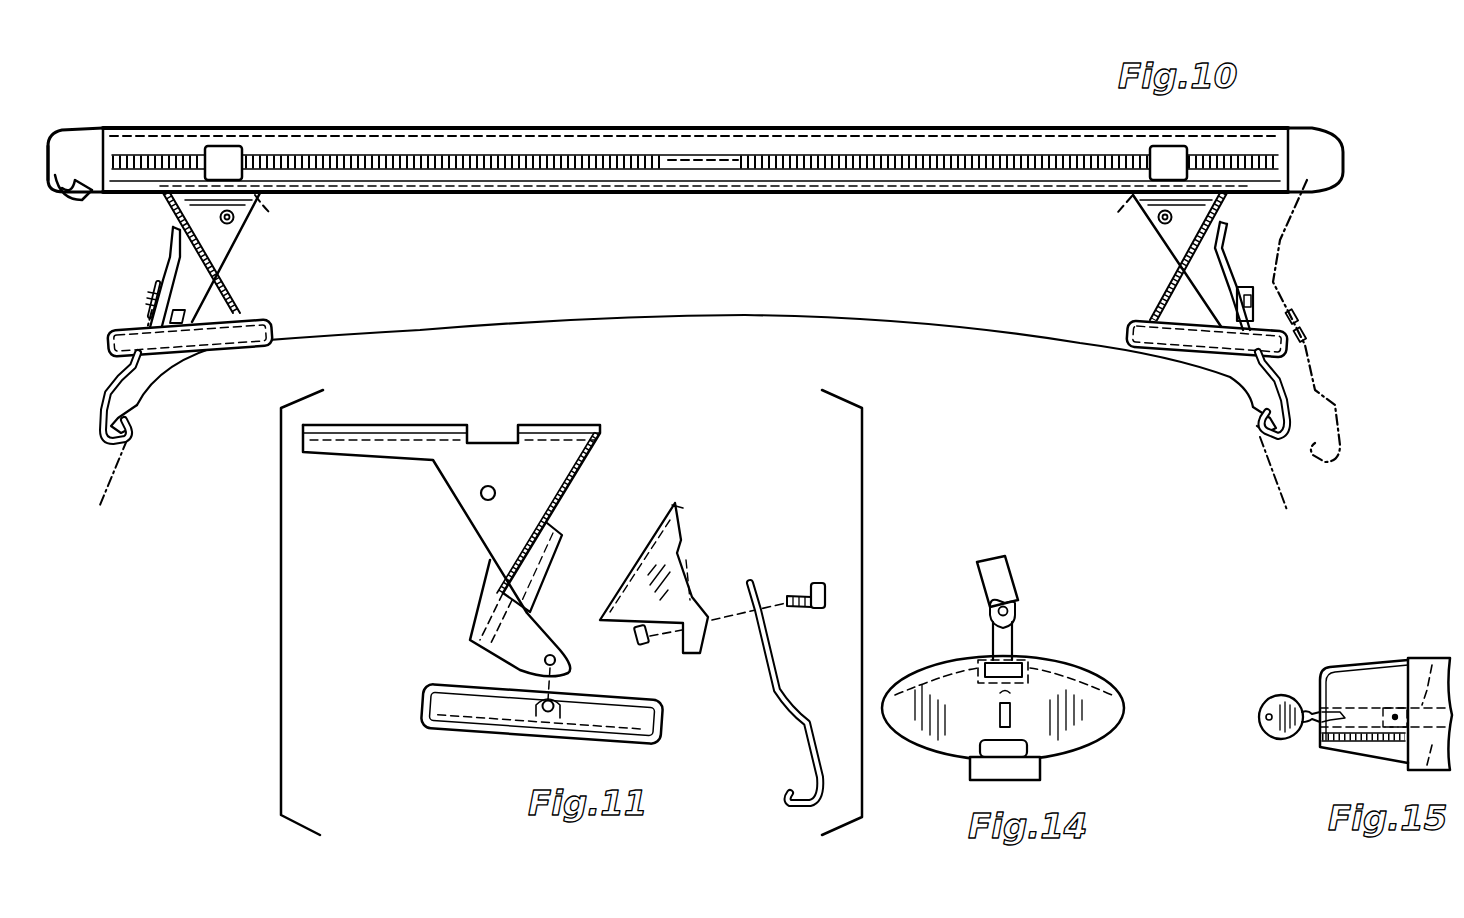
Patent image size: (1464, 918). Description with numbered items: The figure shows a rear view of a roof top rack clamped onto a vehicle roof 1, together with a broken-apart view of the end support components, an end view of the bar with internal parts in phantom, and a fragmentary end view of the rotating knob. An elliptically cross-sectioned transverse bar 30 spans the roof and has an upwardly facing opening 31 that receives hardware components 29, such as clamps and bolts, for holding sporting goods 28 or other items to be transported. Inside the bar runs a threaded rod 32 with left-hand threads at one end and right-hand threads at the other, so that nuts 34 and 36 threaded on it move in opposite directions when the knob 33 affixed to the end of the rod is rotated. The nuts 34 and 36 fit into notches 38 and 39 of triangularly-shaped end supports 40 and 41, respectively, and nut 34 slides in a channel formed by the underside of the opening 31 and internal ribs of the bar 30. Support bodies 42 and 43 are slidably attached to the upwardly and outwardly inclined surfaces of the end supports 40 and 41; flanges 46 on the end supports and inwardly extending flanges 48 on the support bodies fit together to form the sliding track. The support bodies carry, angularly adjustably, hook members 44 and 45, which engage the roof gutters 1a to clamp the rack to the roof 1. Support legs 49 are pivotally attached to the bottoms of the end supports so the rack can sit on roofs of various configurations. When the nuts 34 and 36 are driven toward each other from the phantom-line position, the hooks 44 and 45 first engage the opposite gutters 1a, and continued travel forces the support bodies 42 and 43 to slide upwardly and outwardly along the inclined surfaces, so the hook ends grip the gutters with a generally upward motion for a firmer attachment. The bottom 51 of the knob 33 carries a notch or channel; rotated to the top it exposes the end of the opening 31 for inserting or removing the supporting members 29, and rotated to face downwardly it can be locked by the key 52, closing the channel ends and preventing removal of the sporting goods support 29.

In FIG. 10, the vehicle roof 1 is at (746, 316).
In FIG. 10, the roof gutters 1a is at (135, 425).
In FIG. 14, the sporting goods 28 is at (1000, 575).
In FIG. 14, the hardware components 29 is at (1015, 632).
In FIG. 10, the transverse bar 30 is at (940, 128).
In FIG. 14, the upwardly facing opening 31 is at (1035, 665).
In FIG. 10, the threaded rod 32 is at (690, 158).
In FIG. 15, the threaded rod 32 is at (1434, 660).
In FIG. 10, the knob 33 is at (92, 130).
In FIG. 15, the knob 33 is at (1366, 670).
In FIG. 10, the nut 34 is at (1167, 150).
In FIG. 10, the nut 36 is at (233, 150).
In FIG. 10, the notch 38 is at (1108, 209).
In FIG. 11, the notch 38 is at (504, 428).
In FIG. 10, the notch 39 is at (275, 212).
In FIG. 10, the end support 40 is at (1153, 185).
In FIG. 11, the end support 40 is at (535, 464).
In FIG. 10, the end support 41 is at (222, 242).
In FIG. 10, the support body 42 is at (1225, 262).
In FIG. 11, the support body 42 is at (672, 575).
In FIG. 10, the support body 43 is at (172, 262).
In FIG. 10, the hook member 44 is at (1245, 300).
In FIG. 11, the hook member 44 is at (775, 700).
In FIG. 10, the hook member 45 is at (148, 310).
In FIG. 11, the flange 46 is at (553, 545).
In FIG. 11, the inwardly extending flange 48 is at (680, 505).
In FIG. 10, the support leg 49 is at (255, 325).
In FIG. 11, the support leg 49 is at (472, 737).
In FIG. 15, the bottom of knob 51 is at (1348, 757).
In FIG. 15, the key 52 is at (1268, 700).